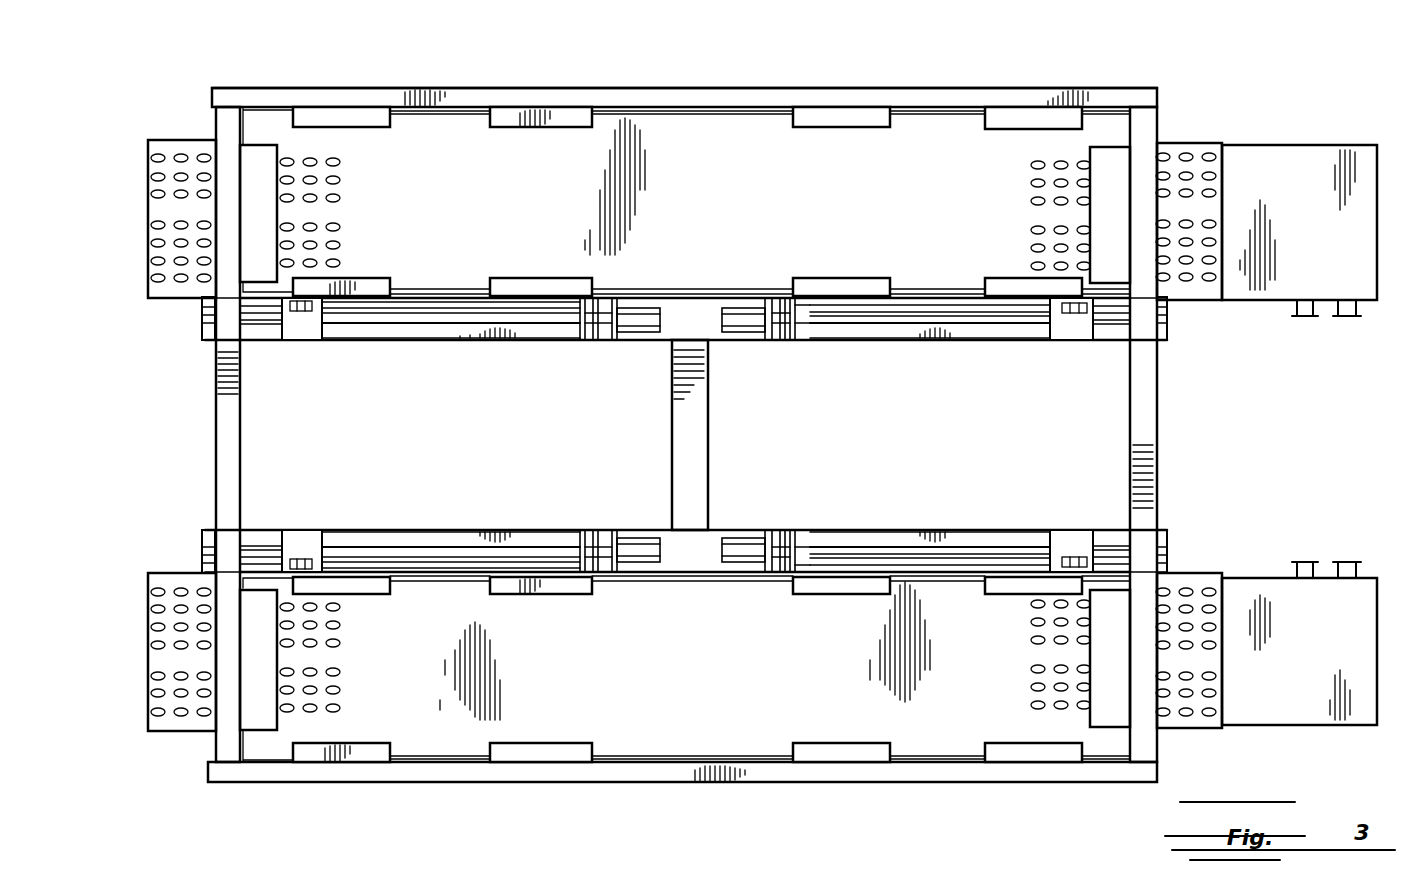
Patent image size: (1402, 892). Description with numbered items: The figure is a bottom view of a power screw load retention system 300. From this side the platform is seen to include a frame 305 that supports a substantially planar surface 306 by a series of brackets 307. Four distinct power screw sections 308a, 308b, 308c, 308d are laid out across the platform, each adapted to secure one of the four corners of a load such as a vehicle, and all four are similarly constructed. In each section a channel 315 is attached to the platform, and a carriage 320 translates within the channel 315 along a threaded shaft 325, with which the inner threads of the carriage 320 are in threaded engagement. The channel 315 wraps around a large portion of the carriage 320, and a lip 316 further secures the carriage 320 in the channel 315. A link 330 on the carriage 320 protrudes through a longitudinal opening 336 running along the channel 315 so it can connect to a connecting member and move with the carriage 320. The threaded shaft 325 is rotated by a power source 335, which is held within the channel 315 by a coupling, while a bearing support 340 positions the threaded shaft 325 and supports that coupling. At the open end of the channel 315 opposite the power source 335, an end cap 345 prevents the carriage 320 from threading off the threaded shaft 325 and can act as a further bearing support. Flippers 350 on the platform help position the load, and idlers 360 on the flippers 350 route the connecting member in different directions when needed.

The power screw load retention system 300 is at (230, 62).
The frame 305 is at (682, 90).
The substantially planar surface 306 is at (462, 140).
The brackets 307 is at (510, 107).
The power screw section 308a is at (180, 318).
The power screw section 308b is at (1185, 322).
The power screw section 308c is at (180, 556).
The power screw section 308d is at (1186, 553).
The channel 315 is at (353, 340).
The lip 316 is at (407, 342).
The carriage 320 is at (300, 342).
The threaded shaft 325 is at (523, 325).
The link 330 is at (298, 315).
The power source 335 is at (637, 322).
The longitudinal opening 336 is at (483, 325).
The bearing support 340 is at (580, 348).
The end cap 345 is at (200, 330).
The flippers 350 is at (1282, 163).
The idlers 360 is at (1303, 320).